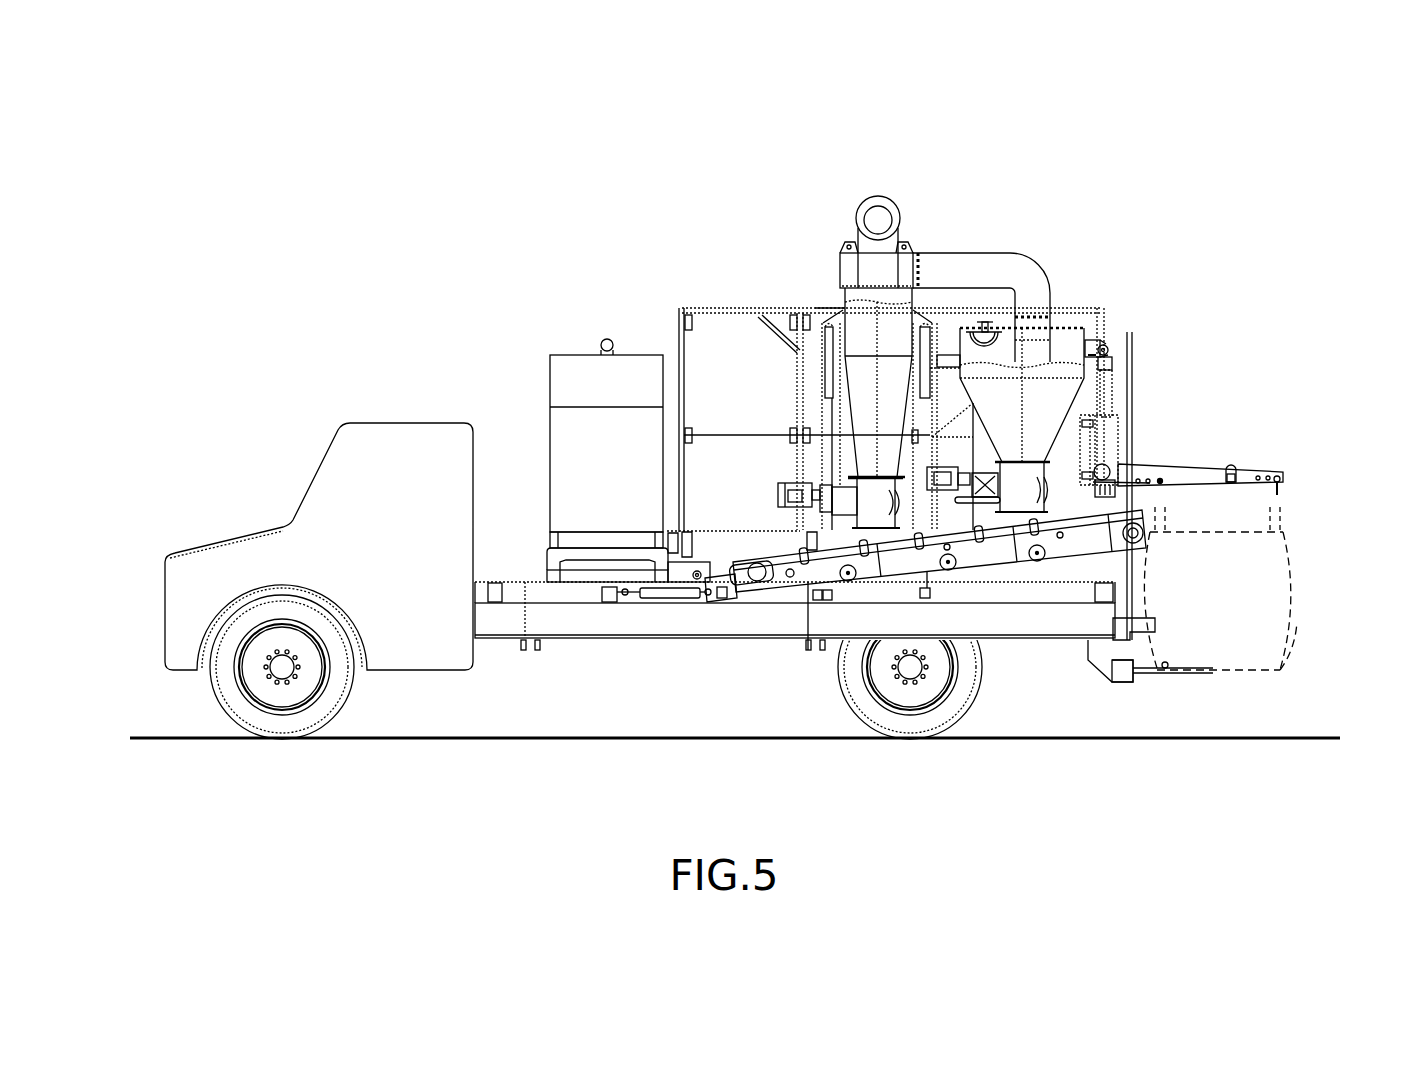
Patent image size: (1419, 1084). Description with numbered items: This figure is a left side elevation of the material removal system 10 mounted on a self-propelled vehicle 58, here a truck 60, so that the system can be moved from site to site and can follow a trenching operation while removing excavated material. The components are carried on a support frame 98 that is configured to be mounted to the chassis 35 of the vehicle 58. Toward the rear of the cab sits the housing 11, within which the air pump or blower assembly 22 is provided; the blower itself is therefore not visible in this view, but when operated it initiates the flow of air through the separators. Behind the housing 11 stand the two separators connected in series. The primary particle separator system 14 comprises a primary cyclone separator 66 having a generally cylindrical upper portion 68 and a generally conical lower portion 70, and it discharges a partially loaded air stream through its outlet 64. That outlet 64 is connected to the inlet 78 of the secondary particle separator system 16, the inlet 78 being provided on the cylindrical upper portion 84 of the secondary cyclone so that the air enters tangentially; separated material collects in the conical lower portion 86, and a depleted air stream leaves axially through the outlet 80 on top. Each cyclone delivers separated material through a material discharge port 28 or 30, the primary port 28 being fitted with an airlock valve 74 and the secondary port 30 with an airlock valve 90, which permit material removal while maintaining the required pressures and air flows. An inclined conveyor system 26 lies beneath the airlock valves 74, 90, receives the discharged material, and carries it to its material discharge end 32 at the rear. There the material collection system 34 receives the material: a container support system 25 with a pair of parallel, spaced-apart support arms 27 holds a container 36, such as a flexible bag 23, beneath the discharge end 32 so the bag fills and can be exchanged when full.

The material removal system 10 is at (1022, 402).
The housing 11 is at (563, 460).
The primary particle separator system 14 is at (1076, 322).
The secondary particle separator system 16 is at (849, 322).
The air pump or blower assembly 22 is at (550, 490).
The flexible bag 23 is at (1297, 622).
The container support system 25 is at (1247, 463).
The conveyor system 26 is at (942, 593).
The support arms 27 is at (1262, 494).
The material discharge port 28 is at (1047, 452).
The material discharge port 30 is at (855, 470).
The material discharge end 32 is at (1145, 527).
The material collection system 34 is at (1292, 466).
The chassis 35 is at (703, 640).
The container 36 is at (1292, 567).
The self-propelled vehicle 58 is at (328, 446).
The truck 60 is at (256, 537).
The outlet 64 is at (1050, 290).
The primary cyclone separator 66 is at (1084, 334).
The upper portion 68 is at (1094, 354).
The lower portion 70 is at (1068, 402).
The airlock valve 74 is at (1050, 482).
The inlet 78 is at (918, 253).
The outlet 80 is at (893, 203).
The upper portion 84 is at (842, 298).
The lower portion 86 is at (845, 400).
The airlock valve 90 is at (823, 505).
The support frame 98 is at (820, 370).